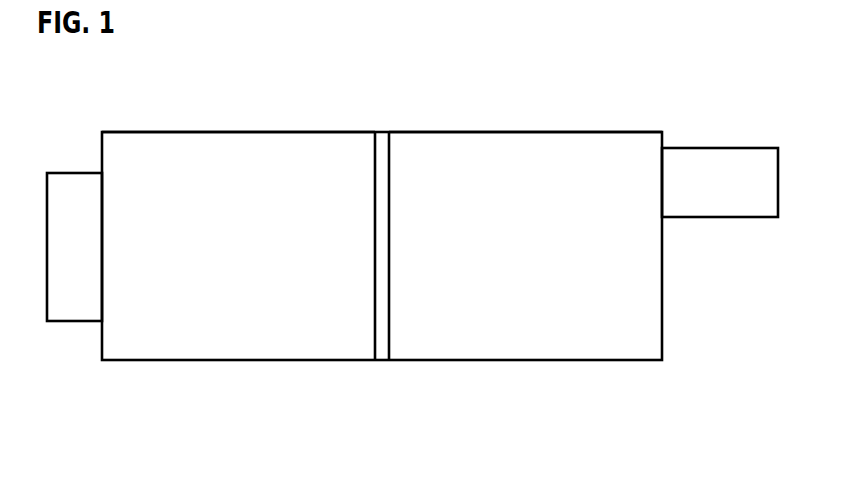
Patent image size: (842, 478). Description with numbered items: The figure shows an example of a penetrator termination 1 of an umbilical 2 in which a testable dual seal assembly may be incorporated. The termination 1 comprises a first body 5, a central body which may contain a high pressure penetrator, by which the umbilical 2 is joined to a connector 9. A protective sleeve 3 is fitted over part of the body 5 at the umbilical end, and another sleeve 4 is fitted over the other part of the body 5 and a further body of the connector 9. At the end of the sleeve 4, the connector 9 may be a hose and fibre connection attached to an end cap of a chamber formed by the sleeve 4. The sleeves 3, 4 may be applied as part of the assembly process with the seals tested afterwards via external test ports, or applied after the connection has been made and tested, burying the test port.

The penetrator termination 1 is at (343, 101).
The umbilical 2 is at (72, 166).
The protective sleeve 3 is at (238, 144).
The sleeve 4 is at (538, 144).
The first body 5 is at (384, 131).
The connector 9 is at (713, 160).